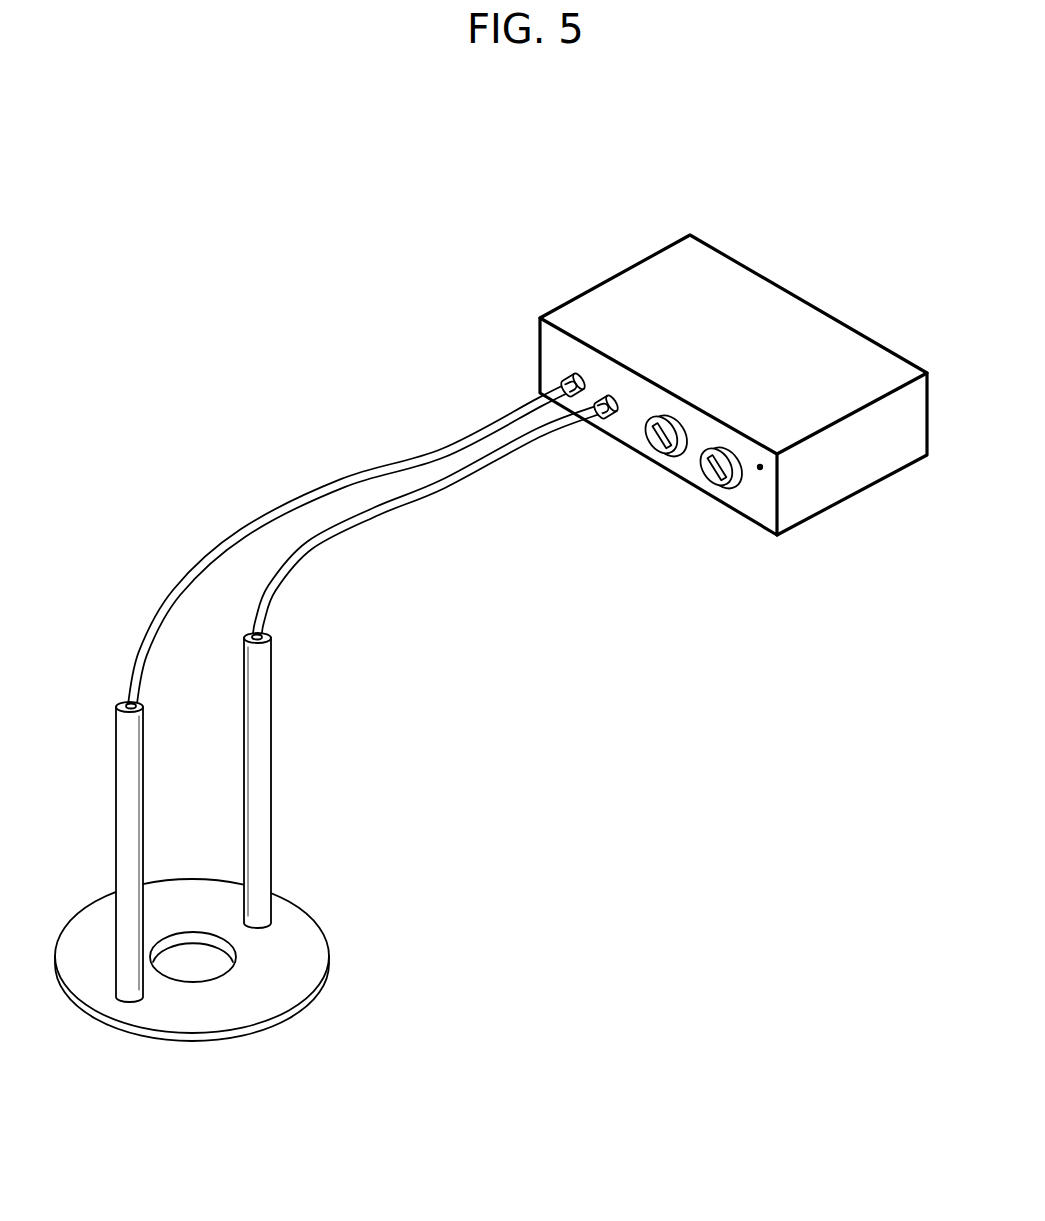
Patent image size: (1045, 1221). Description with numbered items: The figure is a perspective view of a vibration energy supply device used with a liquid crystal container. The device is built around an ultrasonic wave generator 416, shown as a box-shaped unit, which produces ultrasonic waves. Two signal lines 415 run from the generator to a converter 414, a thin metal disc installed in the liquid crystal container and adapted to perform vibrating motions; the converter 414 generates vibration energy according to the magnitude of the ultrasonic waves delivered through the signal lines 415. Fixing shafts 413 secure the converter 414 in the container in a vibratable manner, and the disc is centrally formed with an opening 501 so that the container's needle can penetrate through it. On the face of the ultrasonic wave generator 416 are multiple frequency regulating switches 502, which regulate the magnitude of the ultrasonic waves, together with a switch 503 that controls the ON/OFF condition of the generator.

The fixing shafts 413 is at (262, 768).
The converter 414 is at (300, 947).
The signal lines 415 is at (417, 513).
The ultrasonic wave generator 416 is at (752, 297).
The opening 501 is at (188, 963).
The frequency regulating switches 502 is at (710, 483).
The switch 503 is at (759, 463).